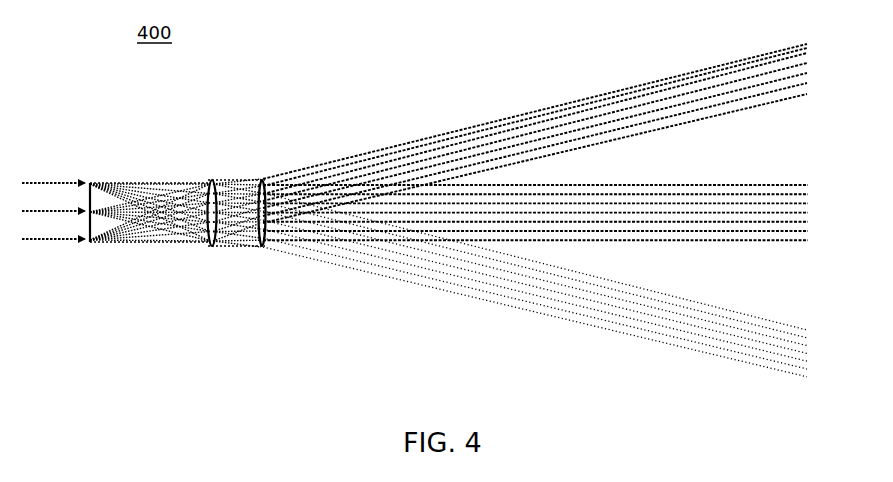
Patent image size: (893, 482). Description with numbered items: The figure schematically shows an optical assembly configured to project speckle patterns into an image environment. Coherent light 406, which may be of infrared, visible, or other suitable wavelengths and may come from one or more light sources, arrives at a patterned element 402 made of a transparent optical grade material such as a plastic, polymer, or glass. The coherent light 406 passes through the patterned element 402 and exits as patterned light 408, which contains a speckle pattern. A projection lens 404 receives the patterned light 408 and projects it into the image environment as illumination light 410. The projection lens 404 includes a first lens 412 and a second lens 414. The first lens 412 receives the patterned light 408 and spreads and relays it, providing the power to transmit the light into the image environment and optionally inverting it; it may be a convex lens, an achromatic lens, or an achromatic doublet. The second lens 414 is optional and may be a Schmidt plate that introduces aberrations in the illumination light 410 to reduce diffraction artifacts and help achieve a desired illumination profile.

The patterned element 402 is at (89, 177).
The projection lens 404 is at (250, 195).
The coherent light 406 is at (55, 245).
The patterned light 408 is at (158, 256).
The illumination light 410 is at (330, 273).
The first lens 412 is at (207, 246).
The second lens 414 is at (257, 246).